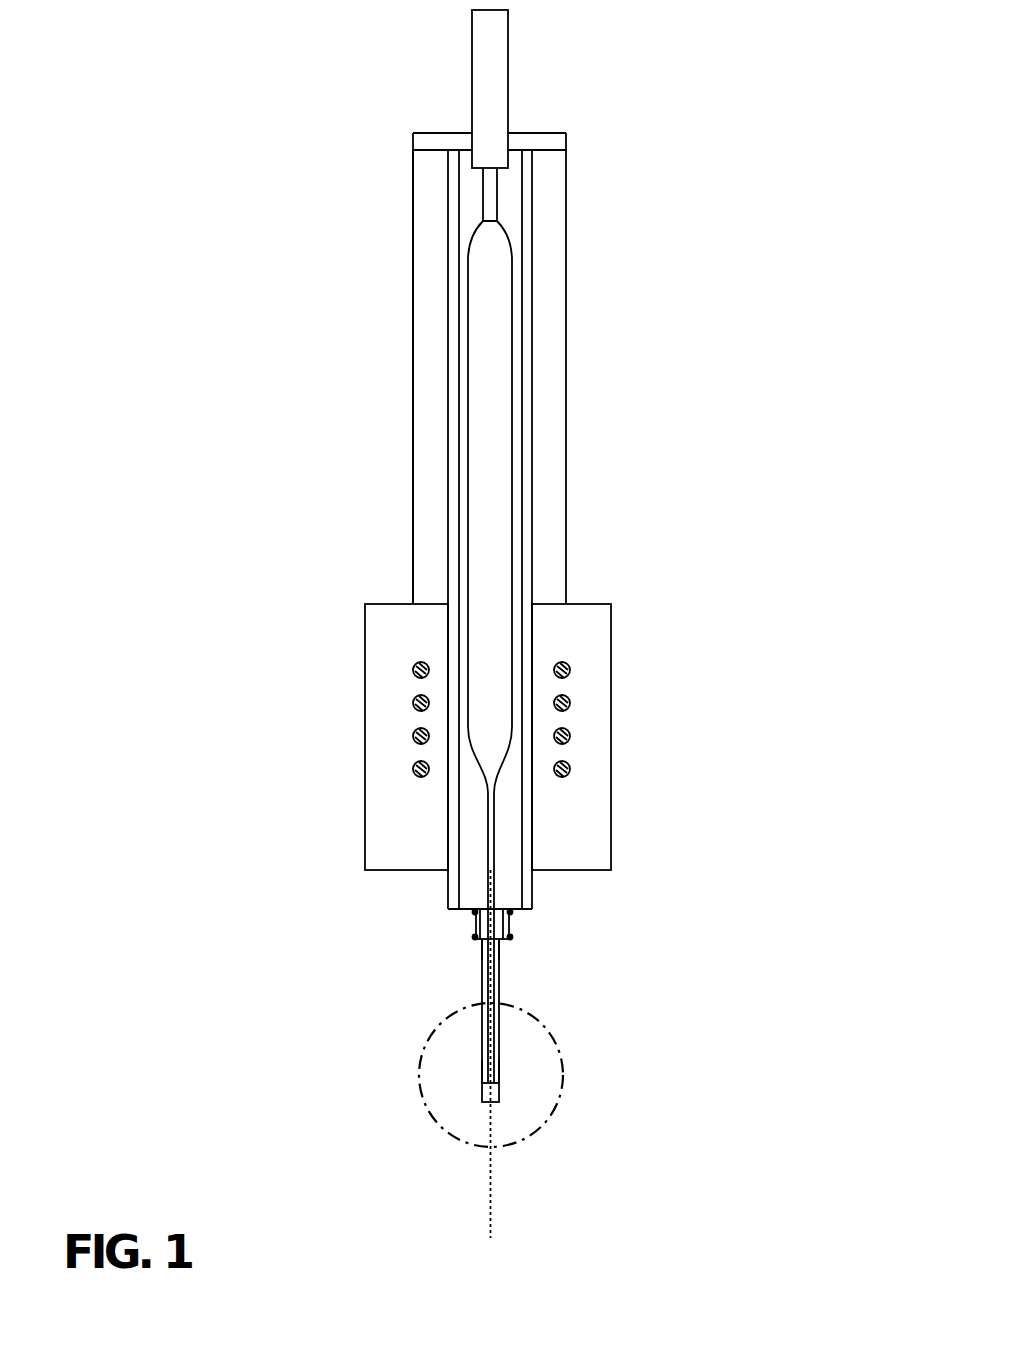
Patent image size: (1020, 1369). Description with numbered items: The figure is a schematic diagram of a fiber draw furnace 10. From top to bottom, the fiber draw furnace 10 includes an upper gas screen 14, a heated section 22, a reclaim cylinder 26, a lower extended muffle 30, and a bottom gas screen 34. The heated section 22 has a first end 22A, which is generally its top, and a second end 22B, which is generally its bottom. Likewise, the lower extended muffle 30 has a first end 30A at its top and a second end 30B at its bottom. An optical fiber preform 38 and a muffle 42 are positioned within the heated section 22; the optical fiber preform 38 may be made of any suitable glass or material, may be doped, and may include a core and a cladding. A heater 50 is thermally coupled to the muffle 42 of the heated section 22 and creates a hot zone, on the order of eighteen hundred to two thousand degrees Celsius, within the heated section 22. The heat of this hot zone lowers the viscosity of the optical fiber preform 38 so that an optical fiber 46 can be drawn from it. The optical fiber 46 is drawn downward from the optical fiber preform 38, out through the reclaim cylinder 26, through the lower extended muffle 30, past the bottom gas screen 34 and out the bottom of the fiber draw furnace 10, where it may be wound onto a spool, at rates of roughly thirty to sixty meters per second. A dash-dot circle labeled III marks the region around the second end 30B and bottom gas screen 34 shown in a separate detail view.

The fiber draw furnace 10 is at (732, 77).
The upper gas screen 14 is at (555, 143).
The heated section 22 is at (375, 473).
The first end 22A is at (413, 193).
The second end 22B is at (365, 732).
The reclaim cylinder 26 is at (503, 923).
The lower extended muffle 30 is at (482, 977).
The first end 30A is at (453, 933).
The second end 30B is at (475, 1070).
The bottom gas screen 34 is at (500, 1093).
The optical fiber preform 38 is at (495, 422).
The muffle 42 is at (527, 217).
The optical fiber 46 is at (492, 1195).
The heater 50 is at (610, 632).
The detail region III is at (557, 1042).